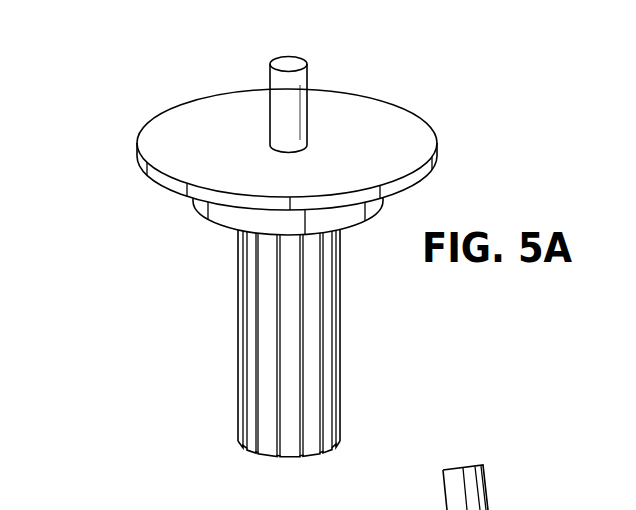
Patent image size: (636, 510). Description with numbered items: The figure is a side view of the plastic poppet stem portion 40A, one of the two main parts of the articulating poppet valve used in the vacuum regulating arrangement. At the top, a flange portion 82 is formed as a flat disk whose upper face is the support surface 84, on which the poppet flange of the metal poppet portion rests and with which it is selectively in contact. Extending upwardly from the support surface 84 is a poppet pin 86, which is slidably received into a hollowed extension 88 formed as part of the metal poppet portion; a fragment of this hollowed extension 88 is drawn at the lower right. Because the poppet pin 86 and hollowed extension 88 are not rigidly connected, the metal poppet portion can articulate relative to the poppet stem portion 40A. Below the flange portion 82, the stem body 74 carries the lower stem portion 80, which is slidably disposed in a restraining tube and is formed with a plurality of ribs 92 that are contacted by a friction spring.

The plastic poppet stem portion 40A is at (224, 383).
The splined shaft 74 is at (315, 367).
The lower stem portion 80 is at (290, 435).
The flange portion 82 is at (170, 128).
The support surface 84 is at (405, 127).
The poppet pin 86 is at (287, 102).
The hollowed extension 88 is at (475, 500).
The ribs 92 is at (243, 310).